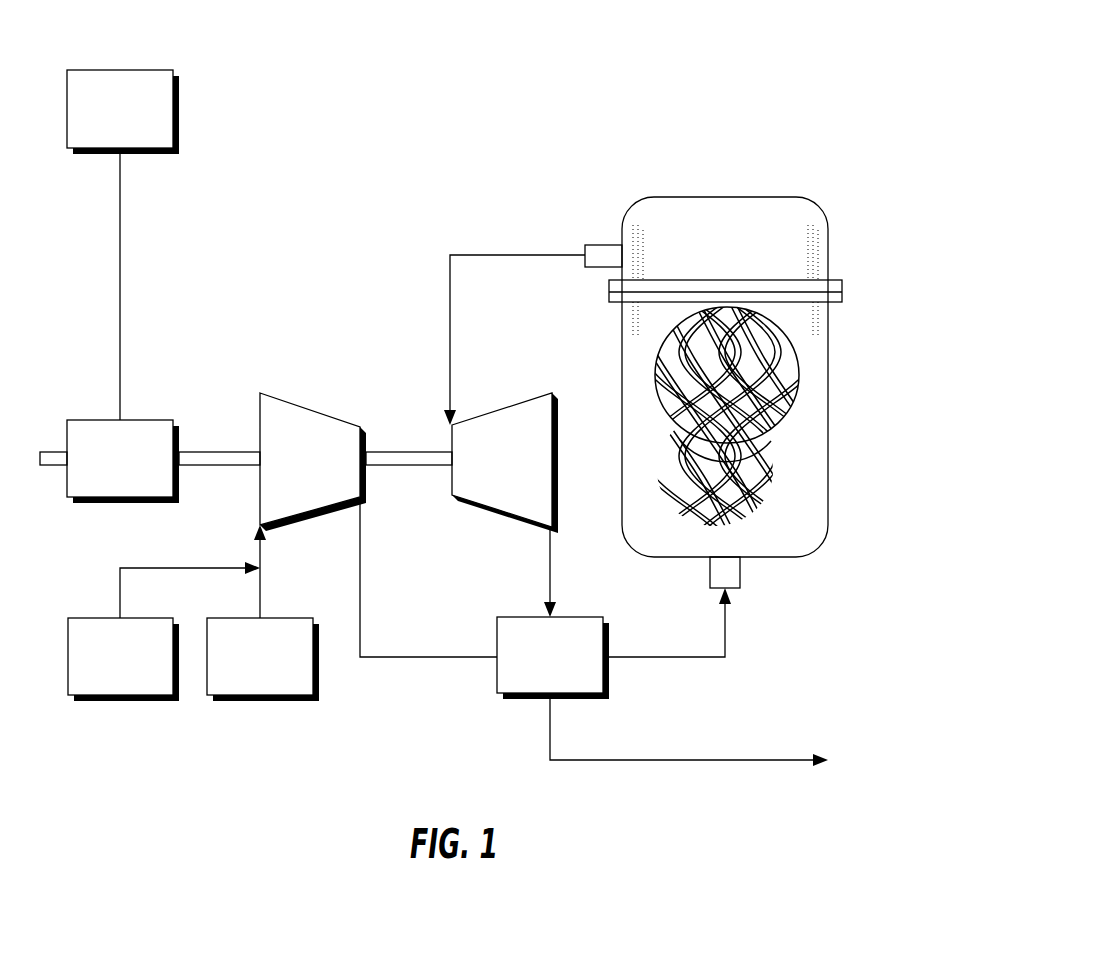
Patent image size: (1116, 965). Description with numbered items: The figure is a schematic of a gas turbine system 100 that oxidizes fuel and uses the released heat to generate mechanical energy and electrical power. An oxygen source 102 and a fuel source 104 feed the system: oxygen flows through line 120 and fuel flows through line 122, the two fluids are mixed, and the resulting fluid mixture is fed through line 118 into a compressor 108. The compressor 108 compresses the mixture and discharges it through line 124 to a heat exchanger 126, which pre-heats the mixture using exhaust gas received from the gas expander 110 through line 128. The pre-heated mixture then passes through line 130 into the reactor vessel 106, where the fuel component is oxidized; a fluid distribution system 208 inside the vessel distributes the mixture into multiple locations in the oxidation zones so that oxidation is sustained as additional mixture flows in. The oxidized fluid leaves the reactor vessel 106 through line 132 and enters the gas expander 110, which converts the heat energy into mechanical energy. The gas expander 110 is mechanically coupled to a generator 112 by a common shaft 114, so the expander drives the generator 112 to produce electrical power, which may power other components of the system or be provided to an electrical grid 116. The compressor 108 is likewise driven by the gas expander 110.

The gas turbine system 100 is at (690, 54).
The oxygen source 102 is at (143, 671).
The fuel source 104 is at (283, 671).
The reactor vessel 106 is at (775, 197).
The compressor 108 is at (333, 468).
The gas expander 110 is at (525, 468).
The generator 112 is at (143, 473).
The common shaft 114 is at (193, 452).
The electrical grid 116 is at (143, 123).
The line 118 is at (262, 548).
The line 120 is at (143, 568).
The line 122 is at (262, 598).
The line 124 is at (360, 598).
The heat exchanger 126 is at (573, 671).
The line 128 is at (548, 560).
The line 130 is at (727, 620).
The line 132 is at (450, 290).
The fluid distribution system 208 is at (782, 420).